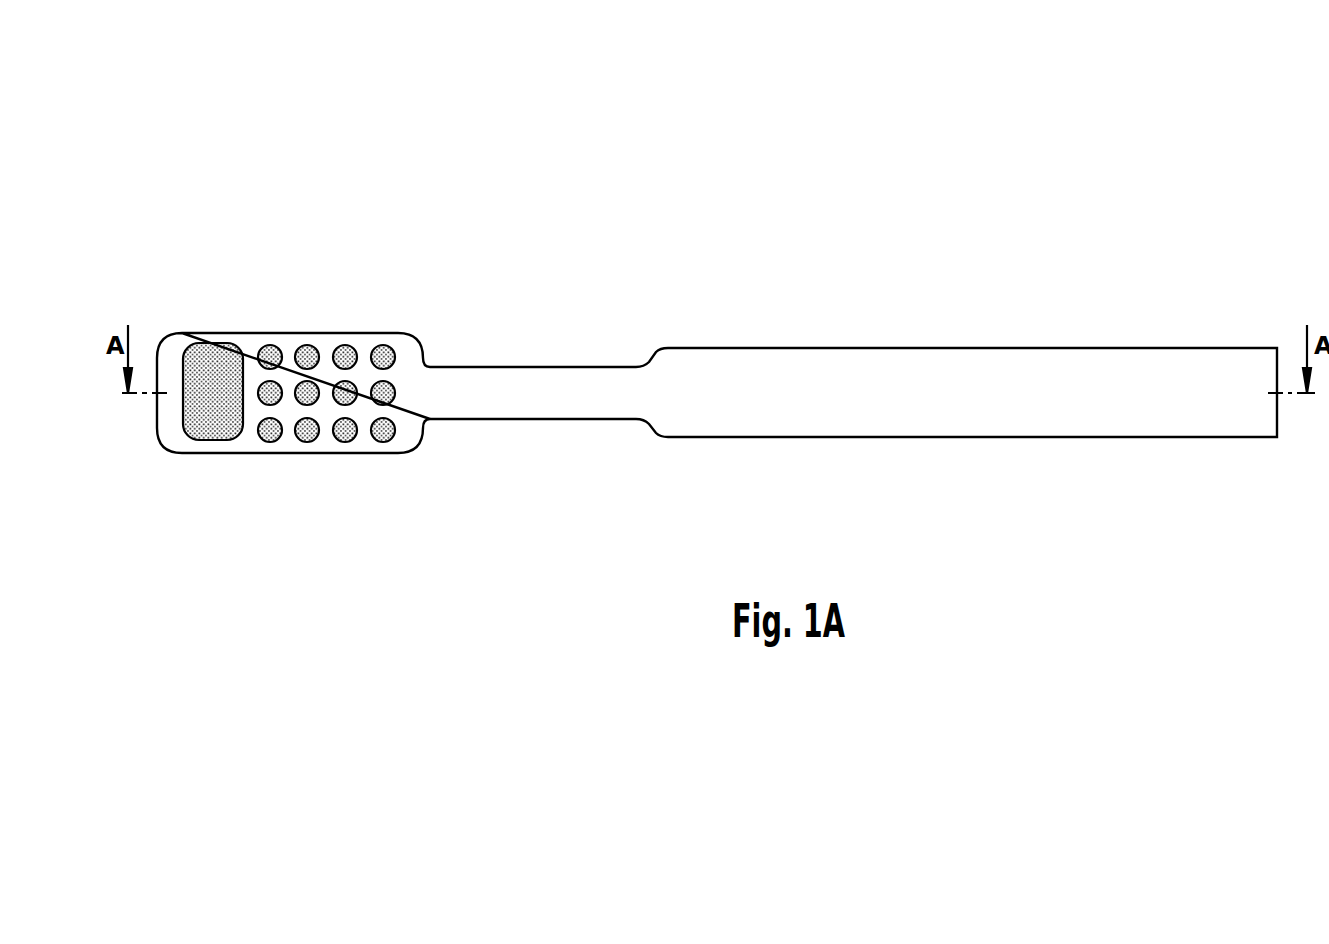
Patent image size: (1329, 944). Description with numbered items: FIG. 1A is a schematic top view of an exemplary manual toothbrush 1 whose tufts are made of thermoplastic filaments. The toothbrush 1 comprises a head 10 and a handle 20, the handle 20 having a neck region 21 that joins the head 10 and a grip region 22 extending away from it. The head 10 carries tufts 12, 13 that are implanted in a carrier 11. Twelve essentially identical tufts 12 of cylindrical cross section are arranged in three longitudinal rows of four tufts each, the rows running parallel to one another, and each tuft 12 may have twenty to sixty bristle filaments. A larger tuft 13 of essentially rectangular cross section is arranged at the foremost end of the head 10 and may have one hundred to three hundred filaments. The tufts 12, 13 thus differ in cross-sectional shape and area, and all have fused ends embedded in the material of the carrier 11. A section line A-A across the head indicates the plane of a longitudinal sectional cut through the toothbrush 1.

The toothbrush 1 is at (820, 165).
The head 10 is at (261, 247).
The carrier 11 is at (215, 343).
The tufts 12 is at (334, 387).
The larger tuft 13 is at (212, 440).
The handle 20 is at (950, 267).
The neck region 21 is at (542, 438).
The grip region 22 is at (950, 463).